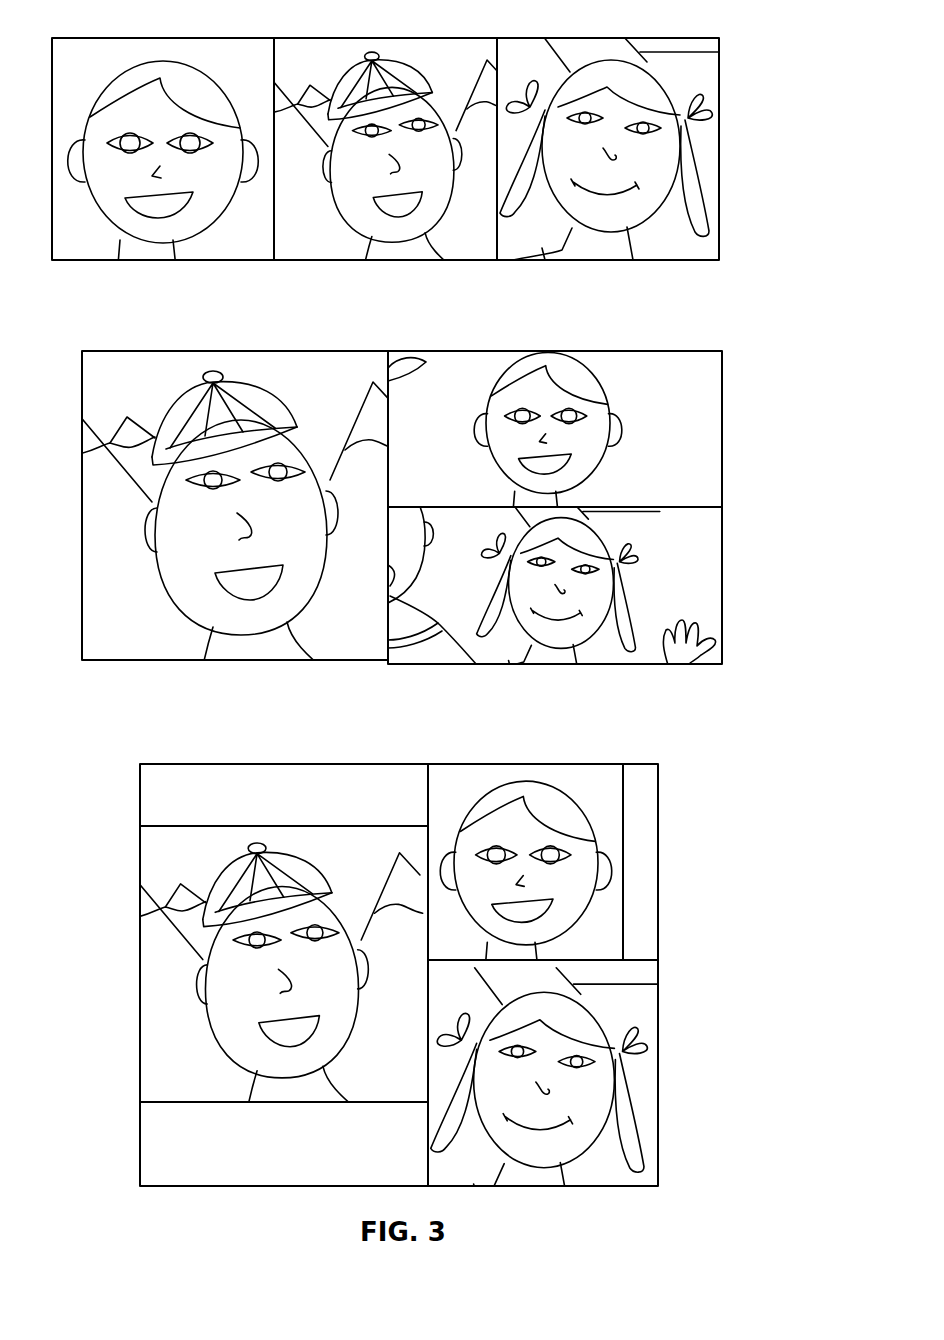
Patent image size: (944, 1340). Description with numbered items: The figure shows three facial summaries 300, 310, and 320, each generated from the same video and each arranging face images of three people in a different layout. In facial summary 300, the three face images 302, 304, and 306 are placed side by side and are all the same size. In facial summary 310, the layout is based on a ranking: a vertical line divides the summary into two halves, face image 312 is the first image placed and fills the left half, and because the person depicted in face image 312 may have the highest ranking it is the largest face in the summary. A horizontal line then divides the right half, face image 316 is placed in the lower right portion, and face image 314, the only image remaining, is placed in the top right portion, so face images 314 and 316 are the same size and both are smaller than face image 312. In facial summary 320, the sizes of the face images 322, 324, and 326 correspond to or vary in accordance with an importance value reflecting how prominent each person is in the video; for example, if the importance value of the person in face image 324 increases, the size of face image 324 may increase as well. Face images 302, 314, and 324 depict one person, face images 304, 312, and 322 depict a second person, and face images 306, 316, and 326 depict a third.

The facial summary 300 is at (750, 163).
The face image 302 is at (165, 36).
The face image 304 is at (387, 36).
The face image 306 is at (600, 36).
The facial summary 310 is at (750, 513).
The face image 312 is at (207, 349).
The face image 314 is at (563, 349).
The face image 316 is at (563, 666).
The facial summary 320 is at (722, 984).
The face image 322 is at (140, 973).
The face image 324 is at (557, 763).
The face image 326 is at (658, 1115).